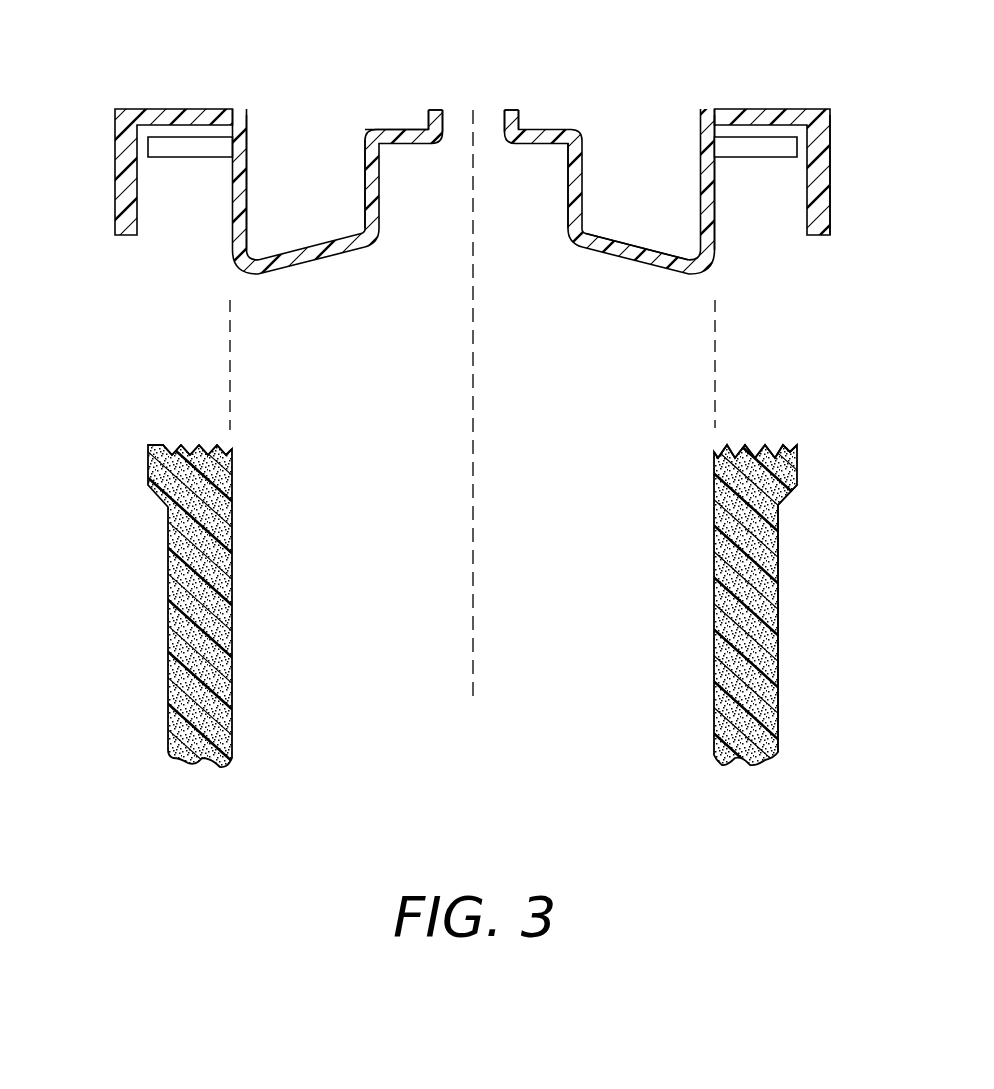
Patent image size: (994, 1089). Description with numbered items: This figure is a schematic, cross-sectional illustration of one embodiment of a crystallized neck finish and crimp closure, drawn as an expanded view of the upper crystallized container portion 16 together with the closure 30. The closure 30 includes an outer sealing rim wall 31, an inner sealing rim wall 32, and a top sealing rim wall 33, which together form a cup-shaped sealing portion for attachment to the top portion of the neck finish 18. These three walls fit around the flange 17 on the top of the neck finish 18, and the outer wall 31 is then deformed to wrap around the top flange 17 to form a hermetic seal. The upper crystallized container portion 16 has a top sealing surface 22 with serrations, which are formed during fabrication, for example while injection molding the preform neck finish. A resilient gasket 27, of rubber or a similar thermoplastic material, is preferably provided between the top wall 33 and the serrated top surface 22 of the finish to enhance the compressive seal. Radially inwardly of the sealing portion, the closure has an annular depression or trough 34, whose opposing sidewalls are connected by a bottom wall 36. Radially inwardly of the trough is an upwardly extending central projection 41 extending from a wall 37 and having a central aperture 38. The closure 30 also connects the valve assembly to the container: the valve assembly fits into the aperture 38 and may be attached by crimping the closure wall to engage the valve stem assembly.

The upper crystallized container portion 16 is at (137, 561).
The flange 17 is at (780, 500).
The neck finish 18 is at (780, 652).
The top sealing surface 22 is at (785, 450).
The gasket 27 is at (207, 158).
The closure 30 is at (152, 69).
The outer sealing rim wall 31 is at (830, 160).
The inner sealing rim wall 32 is at (717, 218).
The top sealing rim wall 33 is at (740, 110).
The annular depression or trough 34 is at (672, 192).
The bottom wall 36 is at (278, 283).
The wall 37 is at (375, 128).
The central aperture 38 is at (443, 118).
The central projection 41 is at (518, 112).